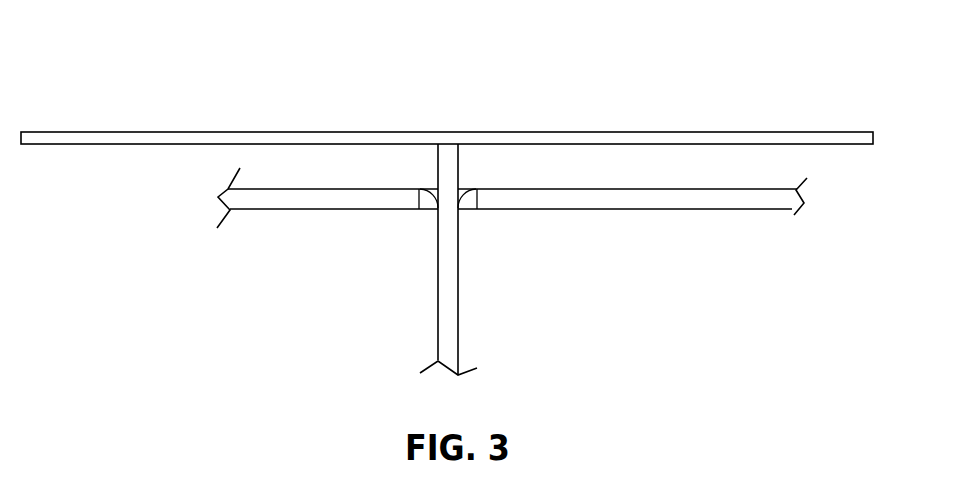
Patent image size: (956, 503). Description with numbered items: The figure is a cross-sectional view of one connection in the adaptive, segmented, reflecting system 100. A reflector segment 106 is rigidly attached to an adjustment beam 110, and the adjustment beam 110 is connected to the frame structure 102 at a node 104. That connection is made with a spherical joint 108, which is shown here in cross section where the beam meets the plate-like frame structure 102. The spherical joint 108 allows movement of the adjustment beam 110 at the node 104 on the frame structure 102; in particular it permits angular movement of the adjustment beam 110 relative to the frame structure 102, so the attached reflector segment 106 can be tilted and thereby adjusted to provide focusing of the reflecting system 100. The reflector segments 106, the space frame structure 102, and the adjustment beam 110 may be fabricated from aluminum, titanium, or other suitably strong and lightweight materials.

The adaptive, segmented, reflecting system 100 is at (190, 73).
The frame structure 102 is at (330, 188).
The node 104 is at (422, 213).
The reflector segment 106 is at (727, 131).
The spherical joint 108 is at (461, 212).
The adjustment beam 110 is at (459, 290).